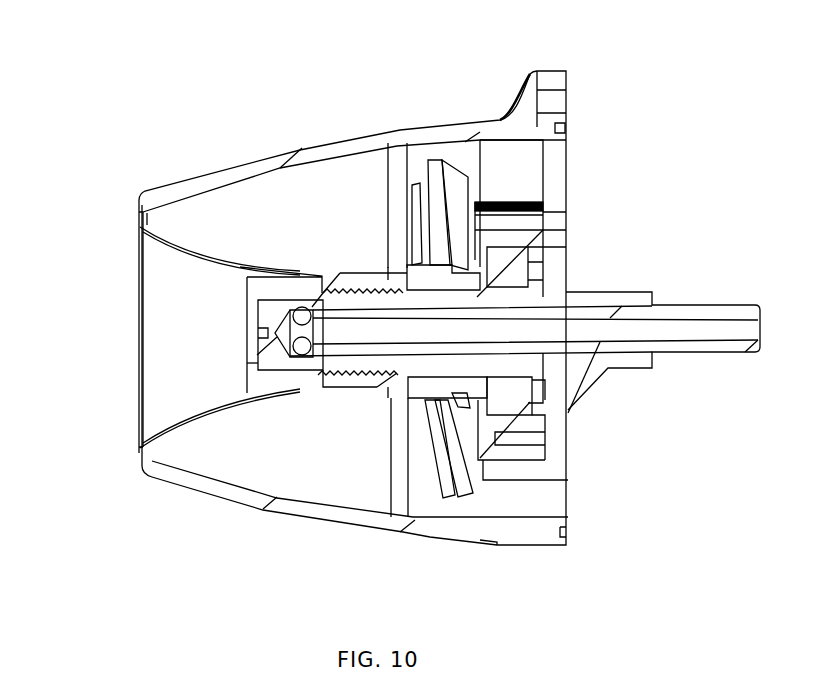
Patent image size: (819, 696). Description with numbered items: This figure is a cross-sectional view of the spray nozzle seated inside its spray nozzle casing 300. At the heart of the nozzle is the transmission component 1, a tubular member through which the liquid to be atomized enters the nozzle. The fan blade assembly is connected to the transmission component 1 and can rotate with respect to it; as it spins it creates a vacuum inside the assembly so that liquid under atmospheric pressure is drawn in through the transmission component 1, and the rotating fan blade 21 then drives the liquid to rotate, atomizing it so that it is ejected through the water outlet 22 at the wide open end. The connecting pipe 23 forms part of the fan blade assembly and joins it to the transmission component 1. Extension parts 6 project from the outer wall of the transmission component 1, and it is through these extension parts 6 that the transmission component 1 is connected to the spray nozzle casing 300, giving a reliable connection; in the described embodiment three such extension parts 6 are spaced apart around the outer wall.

The spray nozzle casing 300 is at (240, 167).
The fan blade 21 is at (447, 270).
The extension part 6 is at (540, 179).
The transmission component 1 is at (612, 303).
The water outlet 22 is at (140, 248).
The connecting pipe 23 is at (440, 367).